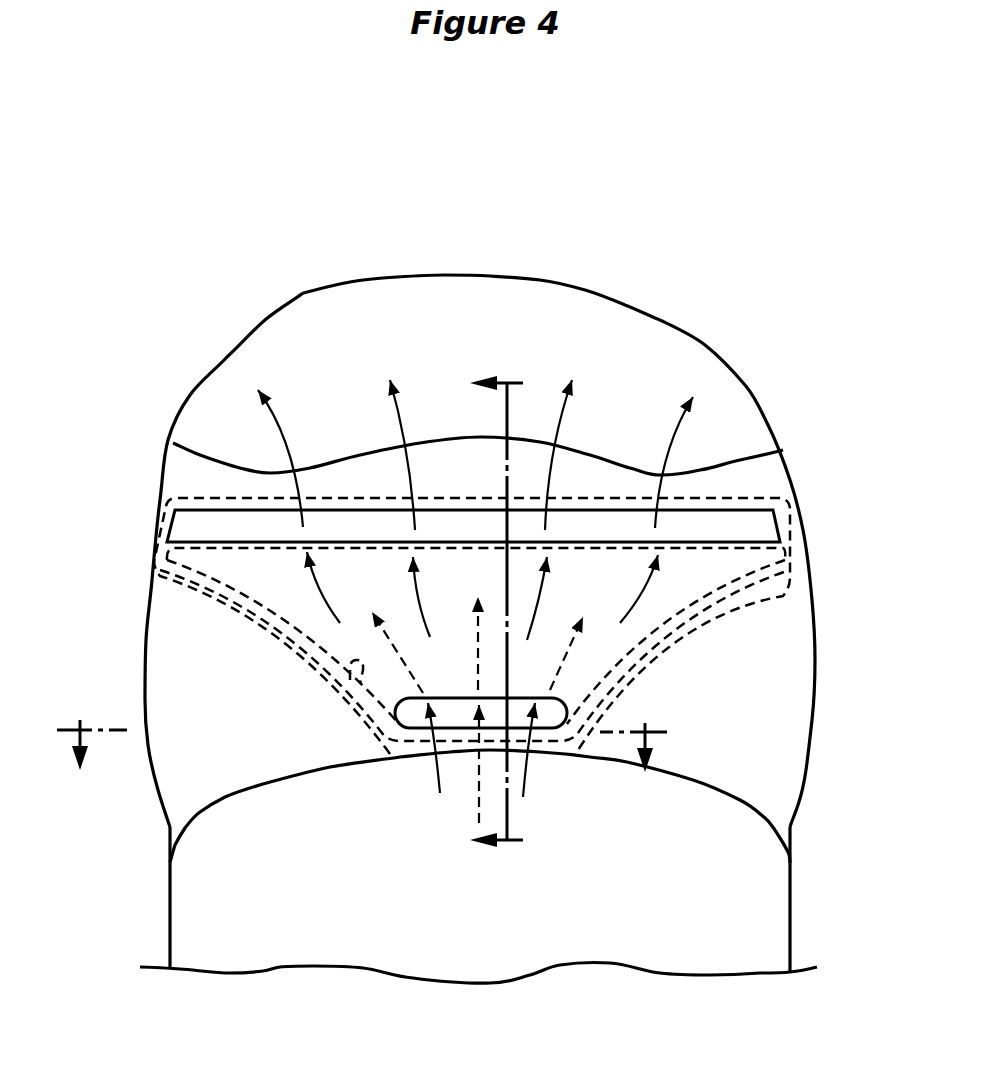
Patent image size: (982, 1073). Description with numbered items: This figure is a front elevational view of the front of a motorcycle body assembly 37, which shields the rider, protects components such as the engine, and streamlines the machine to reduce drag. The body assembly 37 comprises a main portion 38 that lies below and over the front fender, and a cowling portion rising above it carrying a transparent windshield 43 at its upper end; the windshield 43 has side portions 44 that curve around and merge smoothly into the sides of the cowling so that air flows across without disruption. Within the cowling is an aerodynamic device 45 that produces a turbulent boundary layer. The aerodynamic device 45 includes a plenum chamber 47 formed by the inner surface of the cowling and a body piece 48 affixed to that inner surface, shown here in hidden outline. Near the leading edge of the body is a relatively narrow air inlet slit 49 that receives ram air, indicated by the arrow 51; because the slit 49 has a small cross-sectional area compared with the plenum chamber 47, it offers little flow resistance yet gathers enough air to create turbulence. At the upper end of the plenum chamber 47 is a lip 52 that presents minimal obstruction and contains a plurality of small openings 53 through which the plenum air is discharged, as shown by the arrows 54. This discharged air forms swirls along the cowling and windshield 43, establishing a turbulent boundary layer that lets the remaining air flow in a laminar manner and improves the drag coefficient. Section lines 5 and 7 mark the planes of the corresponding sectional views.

The body assembly 37 is at (473, 595).
The main portion 38 is at (637, 943).
The windshield 43 is at (437, 300).
The side portions 44 is at (227, 358).
The aerodynamic device 45 is at (722, 645).
The plenum chamber 47 is at (350, 680).
The body piece 48 is at (752, 608).
The air inlet slit 49 is at (462, 720).
The arrow 51 is at (572, 640).
The lip 52 is at (760, 540).
The openings 53 is at (413, 553).
The arrows 54 is at (573, 410).
The section line 5- 5 is at (506, 616).
The section line 7- 7 is at (358, 749).